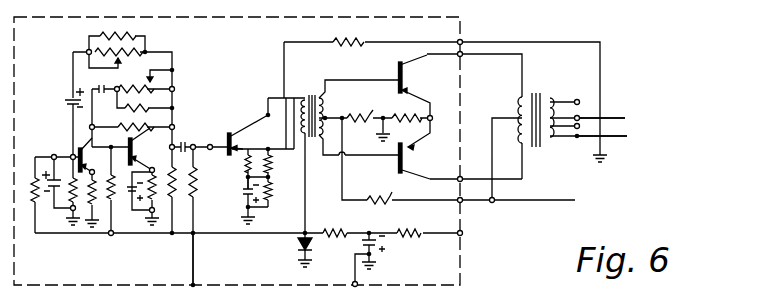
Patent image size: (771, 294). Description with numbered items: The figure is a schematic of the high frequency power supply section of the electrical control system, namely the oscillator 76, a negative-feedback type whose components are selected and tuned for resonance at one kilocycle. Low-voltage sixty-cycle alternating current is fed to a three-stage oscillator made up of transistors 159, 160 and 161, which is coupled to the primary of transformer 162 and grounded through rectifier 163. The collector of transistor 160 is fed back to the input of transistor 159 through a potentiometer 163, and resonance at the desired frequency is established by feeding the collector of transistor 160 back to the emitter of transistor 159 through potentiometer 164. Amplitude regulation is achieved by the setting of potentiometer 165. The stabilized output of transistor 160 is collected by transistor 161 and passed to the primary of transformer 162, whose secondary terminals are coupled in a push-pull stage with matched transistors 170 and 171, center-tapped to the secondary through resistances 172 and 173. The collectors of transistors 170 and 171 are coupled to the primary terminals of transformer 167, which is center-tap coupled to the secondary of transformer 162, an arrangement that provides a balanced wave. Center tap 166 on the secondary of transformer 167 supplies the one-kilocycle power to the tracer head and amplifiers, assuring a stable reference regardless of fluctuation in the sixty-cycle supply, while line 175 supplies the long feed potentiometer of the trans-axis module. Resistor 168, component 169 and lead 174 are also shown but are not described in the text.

The oscillator 76 is at (461, 21).
The transistor 159 is at (78, 148).
The transistor 160 is at (128, 141).
The transistor 161 is at (230, 133).
The transformer 162 is at (315, 96).
The rectifier / potentiometer 163 is at (324, 245).
The potentiometer 164 is at (160, 84).
The potentiometer 165 is at (243, 174).
The center tap 166 is at (608, 118).
The transformer 167 is at (539, 90).
The resistor 168 is at (386, 41).
The resistor 169 is at (249, 147).
The transistor 170 is at (396, 63).
The transistor 171 is at (403, 173).
The resistance 172 is at (369, 112).
The resistance 173 is at (413, 112).
The output lead 174 is at (528, 198).
The line 175 is at (190, 256).